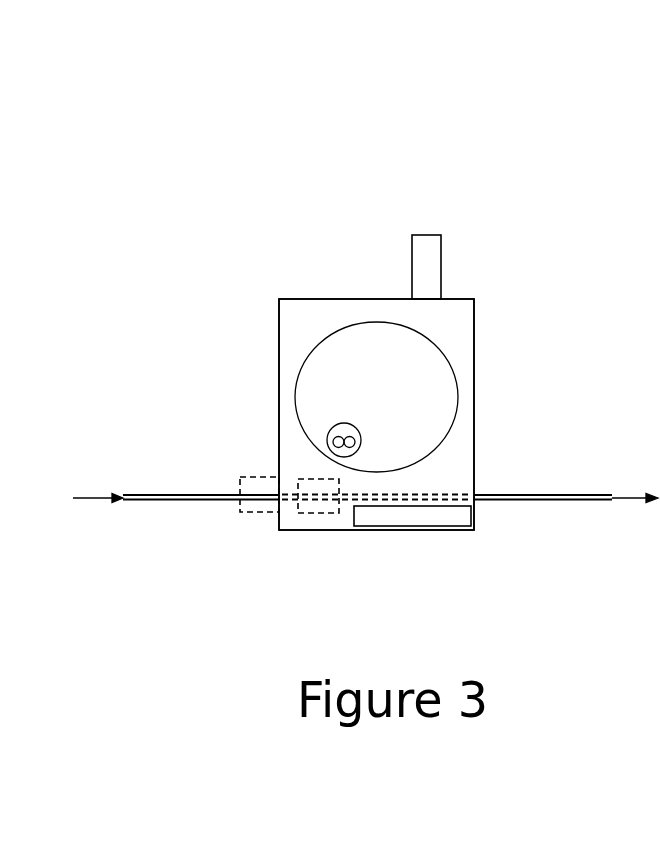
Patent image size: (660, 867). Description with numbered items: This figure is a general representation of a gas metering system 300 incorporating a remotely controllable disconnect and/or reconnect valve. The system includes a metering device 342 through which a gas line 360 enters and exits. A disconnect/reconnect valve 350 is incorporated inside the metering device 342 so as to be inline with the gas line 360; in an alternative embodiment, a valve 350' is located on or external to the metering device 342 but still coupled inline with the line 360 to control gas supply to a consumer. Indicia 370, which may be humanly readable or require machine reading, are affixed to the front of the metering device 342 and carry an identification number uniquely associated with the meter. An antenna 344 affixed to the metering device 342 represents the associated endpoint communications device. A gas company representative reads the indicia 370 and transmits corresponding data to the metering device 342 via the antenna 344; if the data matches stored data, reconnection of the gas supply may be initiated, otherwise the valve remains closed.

The gas metering system 300 is at (310, 222).
The metering device 342 is at (474, 442).
The antenna 344 is at (441, 235).
The disconnect/reconnect valve 350 is at (372, 550).
The disconnect/reconnect valve 350' is at (200, 549).
The gas line 360 is at (195, 495).
The indicia 370 is at (430, 528).